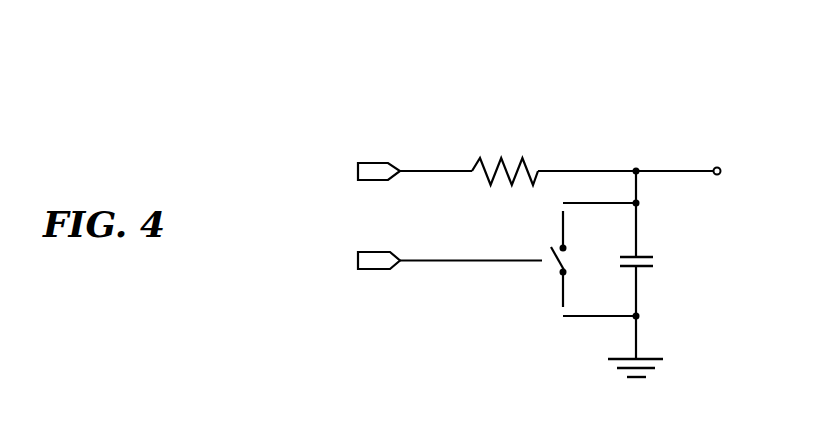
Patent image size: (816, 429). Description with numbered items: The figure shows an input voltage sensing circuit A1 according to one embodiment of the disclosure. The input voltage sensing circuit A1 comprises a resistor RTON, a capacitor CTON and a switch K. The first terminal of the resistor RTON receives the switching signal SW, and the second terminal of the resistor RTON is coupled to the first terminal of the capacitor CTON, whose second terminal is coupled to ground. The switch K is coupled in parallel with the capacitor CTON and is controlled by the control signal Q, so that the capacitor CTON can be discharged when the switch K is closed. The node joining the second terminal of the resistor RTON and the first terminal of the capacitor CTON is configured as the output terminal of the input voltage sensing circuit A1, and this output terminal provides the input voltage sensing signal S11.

The input voltage sensing circuit A1 is at (490, 113).
The resistor RTON is at (505, 159).
The capacitor CTON is at (617, 259).
The switch K is at (547, 259).
The switching signal SW is at (393, 174).
The control signal Q is at (434, 259).
The input voltage sensing signal S11 is at (701, 177).